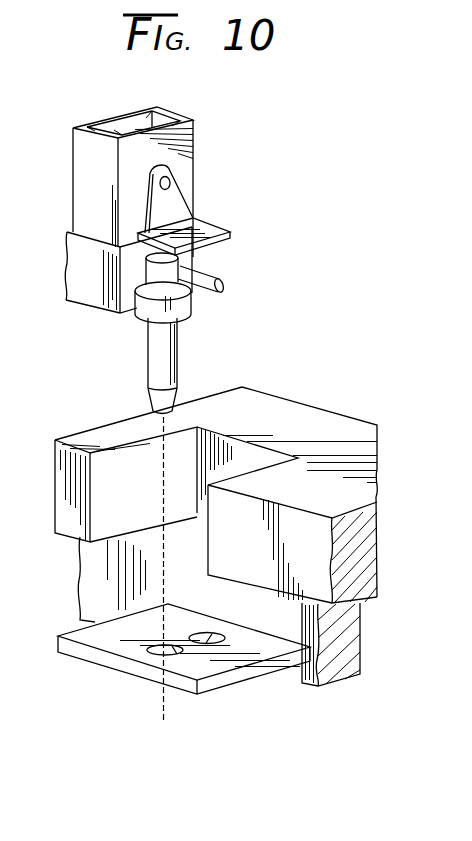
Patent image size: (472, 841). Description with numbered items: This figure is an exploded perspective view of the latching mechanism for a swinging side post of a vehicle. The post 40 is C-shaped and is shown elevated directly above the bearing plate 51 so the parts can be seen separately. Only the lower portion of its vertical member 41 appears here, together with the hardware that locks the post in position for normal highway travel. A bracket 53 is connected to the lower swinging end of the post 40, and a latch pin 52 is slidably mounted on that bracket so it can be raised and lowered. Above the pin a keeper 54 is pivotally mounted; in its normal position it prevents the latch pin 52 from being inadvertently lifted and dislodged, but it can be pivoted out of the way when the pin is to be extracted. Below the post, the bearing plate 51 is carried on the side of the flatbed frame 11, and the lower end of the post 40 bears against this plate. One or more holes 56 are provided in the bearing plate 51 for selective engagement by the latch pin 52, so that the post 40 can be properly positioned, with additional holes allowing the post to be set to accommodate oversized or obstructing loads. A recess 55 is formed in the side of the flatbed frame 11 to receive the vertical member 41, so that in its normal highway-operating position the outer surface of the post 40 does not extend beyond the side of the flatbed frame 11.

The flatbed frame 11 is at (328, 418).
The post 40 is at (198, 128).
The vertical member 41 is at (190, 173).
The bearing plate 51 is at (125, 672).
The latch pin 52 is at (180, 367).
The bracket 53 is at (192, 309).
The keeper 54 is at (203, 225).
The recess 55 is at (127, 517).
The holes 56 is at (182, 655).